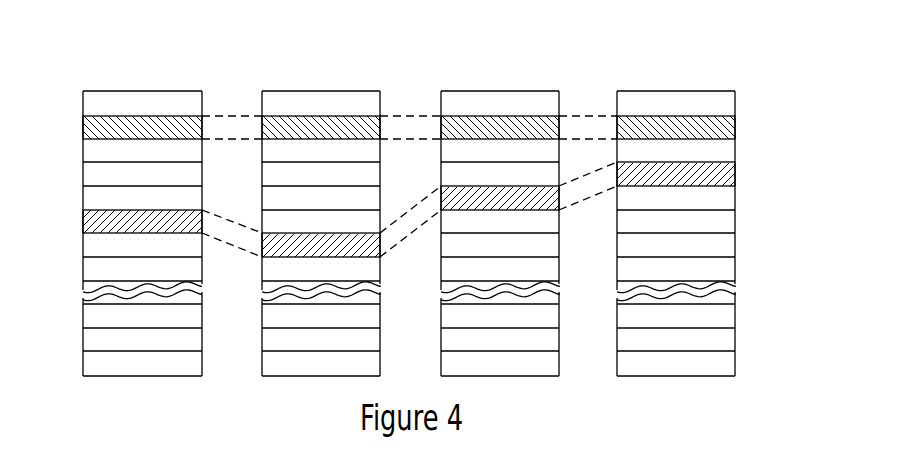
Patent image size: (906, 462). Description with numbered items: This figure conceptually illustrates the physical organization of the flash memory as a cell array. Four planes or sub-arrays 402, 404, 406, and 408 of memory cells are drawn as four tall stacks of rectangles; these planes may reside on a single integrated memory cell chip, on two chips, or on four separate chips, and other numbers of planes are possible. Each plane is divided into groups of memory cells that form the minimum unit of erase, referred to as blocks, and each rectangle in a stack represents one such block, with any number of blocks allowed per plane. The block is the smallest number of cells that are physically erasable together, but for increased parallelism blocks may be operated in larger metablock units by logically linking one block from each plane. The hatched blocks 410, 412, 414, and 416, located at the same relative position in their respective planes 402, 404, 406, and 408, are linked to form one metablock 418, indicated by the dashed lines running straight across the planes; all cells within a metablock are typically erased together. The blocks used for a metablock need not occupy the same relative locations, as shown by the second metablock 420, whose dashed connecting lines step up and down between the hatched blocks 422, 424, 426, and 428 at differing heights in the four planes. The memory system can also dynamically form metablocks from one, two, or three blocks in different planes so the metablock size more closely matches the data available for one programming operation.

The plane 402 is at (122, 202).
The plane 404 is at (305, 202).
The plane 406 is at (476, 202).
The plane 408 is at (706, 202).
The block 410 is at (125, 130).
The block 412 is at (300, 130).
The block 414 is at (480, 130).
The block 416 is at (702, 125).
The metablock 418 is at (592, 125).
The second metablock 420 is at (588, 183).
The block 422 is at (120, 220).
The block 424 is at (297, 245).
The block 426 is at (487, 195).
The block 428 is at (702, 170).